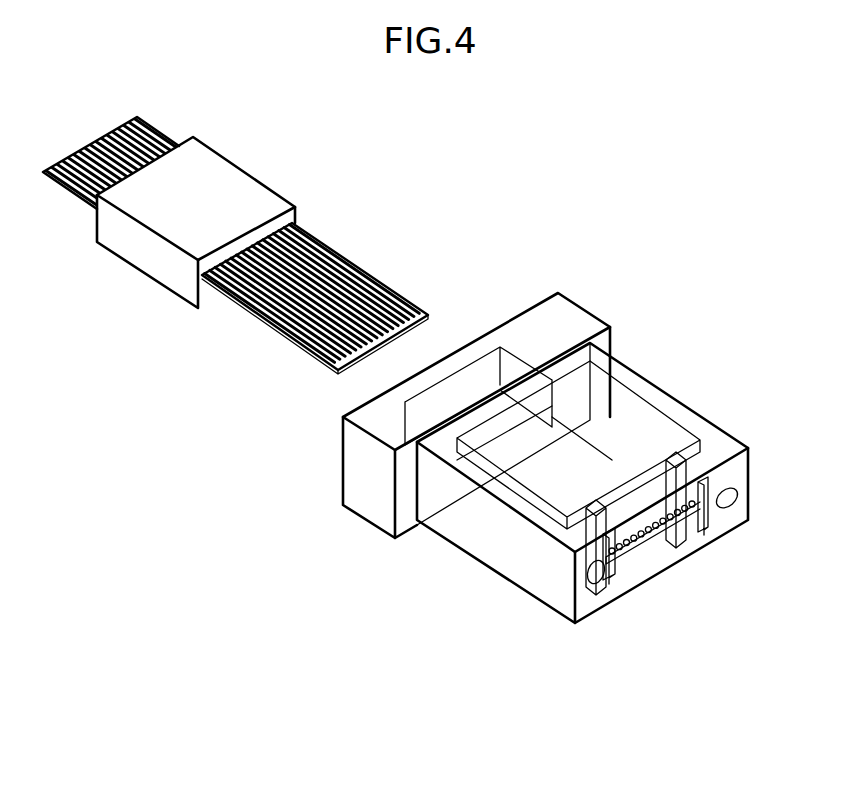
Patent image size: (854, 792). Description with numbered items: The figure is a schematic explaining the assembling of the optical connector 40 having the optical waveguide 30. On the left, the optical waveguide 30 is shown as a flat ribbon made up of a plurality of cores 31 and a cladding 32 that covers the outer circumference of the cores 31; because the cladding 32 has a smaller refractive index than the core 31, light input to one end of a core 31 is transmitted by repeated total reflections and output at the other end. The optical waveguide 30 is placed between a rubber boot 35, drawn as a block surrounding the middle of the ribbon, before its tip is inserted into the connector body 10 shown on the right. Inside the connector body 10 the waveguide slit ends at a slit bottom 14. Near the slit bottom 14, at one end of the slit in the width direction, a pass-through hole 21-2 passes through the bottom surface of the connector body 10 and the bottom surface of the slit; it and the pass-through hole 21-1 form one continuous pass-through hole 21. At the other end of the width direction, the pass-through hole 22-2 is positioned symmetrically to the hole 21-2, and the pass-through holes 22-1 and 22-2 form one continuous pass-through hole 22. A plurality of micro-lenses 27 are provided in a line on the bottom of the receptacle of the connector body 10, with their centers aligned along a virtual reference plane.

The connector body 10 is at (622, 385).
The slit bottom 14 is at (627, 580).
The pass-through hole 21 is at (537, 601).
The pass-through hole 21-1 is at (590, 522).
The pass-through hole 21-2 is at (590, 558).
The pass-through hole 22 is at (727, 428).
The pass-through hole 22-1 is at (677, 452).
The pass-through hole 22-2 is at (750, 490).
The micro-lenses 27 is at (645, 548).
The optical waveguide 30 is at (235, 270).
The cores 31 is at (233, 360).
The cladding 32 is at (268, 318).
The rubber boot 35 is at (228, 182).
The optical connector 40 is at (566, 448).